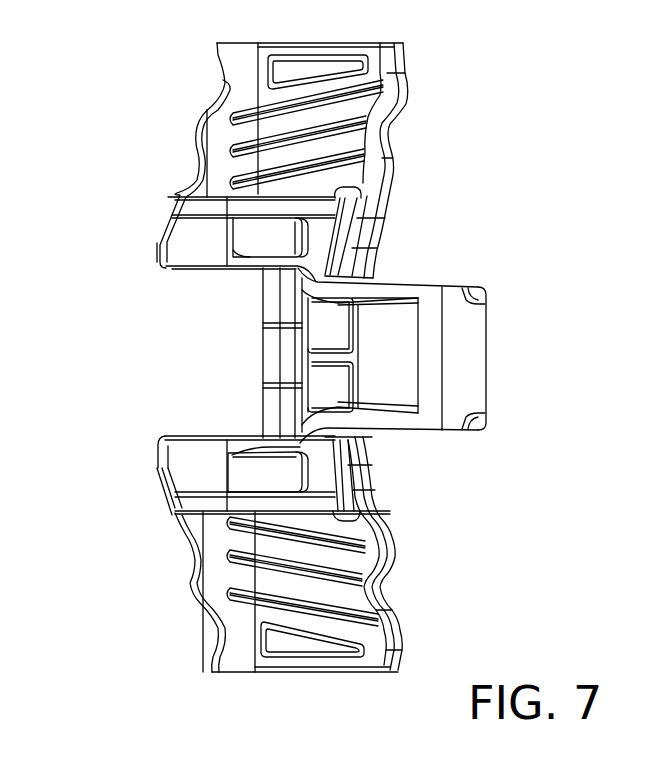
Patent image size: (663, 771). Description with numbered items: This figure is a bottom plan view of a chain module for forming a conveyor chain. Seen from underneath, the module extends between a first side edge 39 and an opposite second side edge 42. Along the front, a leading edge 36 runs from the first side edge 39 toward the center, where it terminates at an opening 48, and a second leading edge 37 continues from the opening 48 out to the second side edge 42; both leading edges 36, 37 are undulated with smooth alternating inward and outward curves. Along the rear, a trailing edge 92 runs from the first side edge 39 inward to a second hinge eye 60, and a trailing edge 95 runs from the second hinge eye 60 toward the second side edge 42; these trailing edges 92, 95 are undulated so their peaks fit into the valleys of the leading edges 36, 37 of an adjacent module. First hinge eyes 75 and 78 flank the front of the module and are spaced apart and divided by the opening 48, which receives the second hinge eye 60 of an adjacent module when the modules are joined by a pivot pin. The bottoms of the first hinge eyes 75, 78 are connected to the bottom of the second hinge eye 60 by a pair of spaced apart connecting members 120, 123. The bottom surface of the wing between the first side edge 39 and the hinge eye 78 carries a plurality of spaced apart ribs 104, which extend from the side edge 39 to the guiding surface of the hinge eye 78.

The opening 48 is at (200, 350).
The first side edge 39 is at (310, 41).
The leading edge 36 is at (200, 110).
The trailing edge 92 is at (395, 122).
The ribs 104 is at (283, 112).
The first hinge eye 78 is at (207, 233).
The spaced apart member 120 is at (377, 288).
The spaced apart member 123 is at (373, 420).
The second hinge eye 60 is at (460, 355).
The first hinge eye 75 is at (198, 463).
The leading edge 37 is at (190, 582).
The trailing edge 95 is at (387, 563).
The second side edge 42 is at (313, 672).